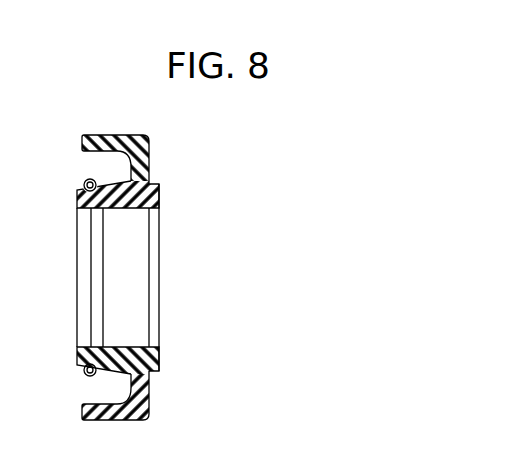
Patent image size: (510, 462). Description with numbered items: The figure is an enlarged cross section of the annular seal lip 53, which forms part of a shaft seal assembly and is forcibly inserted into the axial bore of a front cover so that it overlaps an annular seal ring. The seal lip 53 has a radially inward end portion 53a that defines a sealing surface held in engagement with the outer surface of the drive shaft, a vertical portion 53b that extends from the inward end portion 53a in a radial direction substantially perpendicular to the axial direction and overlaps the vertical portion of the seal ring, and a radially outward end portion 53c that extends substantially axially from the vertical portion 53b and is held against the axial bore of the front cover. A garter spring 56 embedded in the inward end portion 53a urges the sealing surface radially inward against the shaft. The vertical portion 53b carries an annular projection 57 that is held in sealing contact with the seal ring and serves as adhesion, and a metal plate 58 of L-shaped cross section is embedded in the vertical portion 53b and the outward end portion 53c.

The annular seal lip 53 is at (137, 261).
The radially inward end portion 53a is at (157, 206).
The vertical portion 53b is at (150, 175).
The radially outward end portion 53c is at (113, 136).
The garter spring 56 is at (86, 375).
The annular projection 57 is at (153, 387).
The metal plate 58 is at (147, 152).